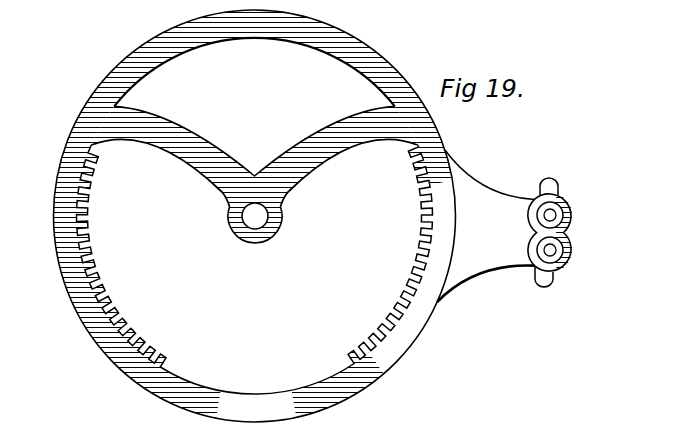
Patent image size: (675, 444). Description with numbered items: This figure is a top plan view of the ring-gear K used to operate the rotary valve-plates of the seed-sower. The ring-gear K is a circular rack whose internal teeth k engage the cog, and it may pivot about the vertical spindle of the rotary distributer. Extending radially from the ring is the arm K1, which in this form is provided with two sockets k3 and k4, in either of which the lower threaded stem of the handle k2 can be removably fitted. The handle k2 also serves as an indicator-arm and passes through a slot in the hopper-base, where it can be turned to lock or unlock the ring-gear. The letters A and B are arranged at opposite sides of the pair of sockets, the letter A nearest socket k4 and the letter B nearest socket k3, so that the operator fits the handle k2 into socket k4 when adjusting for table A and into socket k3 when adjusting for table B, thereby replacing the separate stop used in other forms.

The ring-gear K is at (404, 50).
The arm of the ring-gear K1 is at (489, 234).
The teeth k is at (406, 248).
The handle k2 is at (103, 289).
The socket k3 is at (566, 266).
The socket k4 is at (564, 213).
The letter A is at (556, 184).
The letter B is at (548, 283).